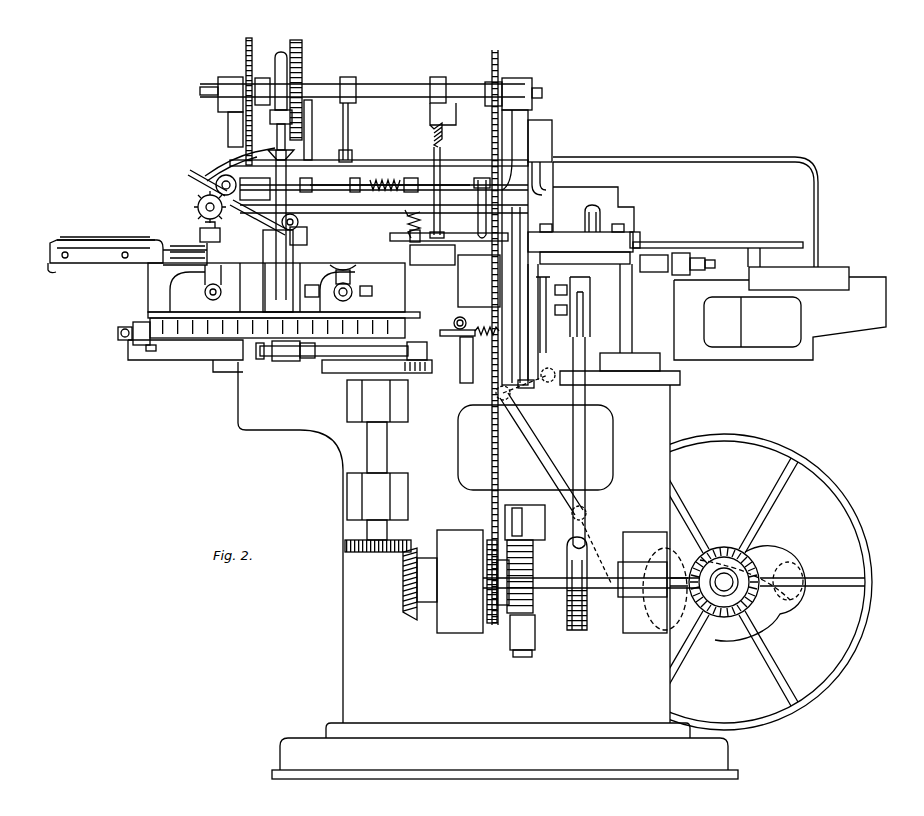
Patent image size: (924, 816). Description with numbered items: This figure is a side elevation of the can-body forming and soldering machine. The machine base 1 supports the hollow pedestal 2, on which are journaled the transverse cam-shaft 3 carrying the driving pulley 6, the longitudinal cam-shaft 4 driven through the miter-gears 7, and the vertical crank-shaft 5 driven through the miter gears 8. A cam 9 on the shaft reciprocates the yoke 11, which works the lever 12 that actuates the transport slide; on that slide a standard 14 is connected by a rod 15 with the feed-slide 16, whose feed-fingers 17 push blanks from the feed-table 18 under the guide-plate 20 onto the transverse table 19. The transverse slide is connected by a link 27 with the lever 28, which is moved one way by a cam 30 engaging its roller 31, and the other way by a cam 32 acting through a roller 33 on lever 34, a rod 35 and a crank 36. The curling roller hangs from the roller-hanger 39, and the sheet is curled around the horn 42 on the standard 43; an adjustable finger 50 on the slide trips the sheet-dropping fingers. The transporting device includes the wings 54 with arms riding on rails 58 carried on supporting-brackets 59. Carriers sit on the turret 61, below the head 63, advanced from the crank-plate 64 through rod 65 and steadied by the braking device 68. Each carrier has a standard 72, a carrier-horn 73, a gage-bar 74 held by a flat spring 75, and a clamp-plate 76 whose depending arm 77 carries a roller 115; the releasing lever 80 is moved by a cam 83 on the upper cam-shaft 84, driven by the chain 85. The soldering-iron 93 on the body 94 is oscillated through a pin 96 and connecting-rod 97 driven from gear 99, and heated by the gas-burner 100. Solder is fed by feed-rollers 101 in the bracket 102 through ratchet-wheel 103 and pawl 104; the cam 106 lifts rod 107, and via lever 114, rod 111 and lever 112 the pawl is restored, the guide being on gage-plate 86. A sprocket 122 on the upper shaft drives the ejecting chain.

The machine base 1 is at (505, 751).
The hollow pedestal 2 is at (355, 631).
The transverse cam-shaft 3 is at (724, 582).
The longitudinal cam-shaft 4 is at (591, 579).
The vertical crank-shaft 5 is at (380, 450).
The driving pulley 6 is at (815, 677).
The miter-gears 7 is at (700, 617).
The miter gears 8 is at (410, 556).
The cam 9 is at (786, 562).
The yoke 11 is at (800, 588).
The lever 12 is at (536, 446).
The standard 14 is at (551, 315).
The rod 15 is at (661, 277).
The feed-slide 16 is at (799, 278).
The feed-fingers 17 is at (762, 262).
The feed-table 18 is at (790, 250).
The transverse table 19 is at (604, 304).
The guide-plate 20 is at (640, 240).
The link 27 is at (588, 309).
The lever 28 is at (585, 446).
The cam 30 is at (572, 630).
The roller 31 is at (586, 612).
The cam 32 is at (530, 594).
The roller 33 is at (526, 660).
The lever 34 is at (512, 655).
The rod 35 is at (512, 620).
The crank 36 is at (520, 512).
The roller-hanger 39 is at (558, 197).
The horn 42 is at (655, 262).
The standard 43 is at (693, 264).
The adjustable finger 50 is at (597, 218).
The wings 54 is at (479, 281).
The rails 58 is at (462, 336).
The supporting-brackets 59 is at (465, 372).
The turret 61 is at (205, 330).
The head 63 is at (254, 255).
The crank-plate 64 is at (415, 373).
The rod 65 is at (315, 360).
The braking device 68 is at (150, 346).
The carrier standard 72 is at (157, 291).
The carrier-horn 73 is at (363, 255).
The gage-bar 74 is at (50, 253).
The flat spring 75 is at (55, 264).
The clamp-plate 76 is at (93, 240).
The depending arm 77 is at (349, 282).
The releasing lever 80 is at (349, 129).
The cam 83 is at (352, 80).
The upper cam-shaft 84 is at (380, 92).
The chain 85 is at (498, 133).
The gage-plate 86 is at (410, 233).
The soldering-iron 93 is at (266, 233).
The body 94 is at (270, 140).
The pin 96 is at (312, 190).
The connecting-rod 97 is at (311, 150).
The gear 99 is at (302, 53).
The gas-burner 100 is at (300, 222).
The feed-rollers 101 is at (196, 195).
The bracket 102 is at (243, 187).
The ratchet-wheel 103 is at (218, 174).
The pawl 104 is at (188, 172).
The cam 106 is at (442, 80).
The rod 107 is at (442, 162).
The rod 111 is at (405, 187).
The lever 112 is at (337, 172).
The lever 114 is at (480, 198).
The roller 115 is at (224, 249).
The sprocket 122 is at (255, 45).